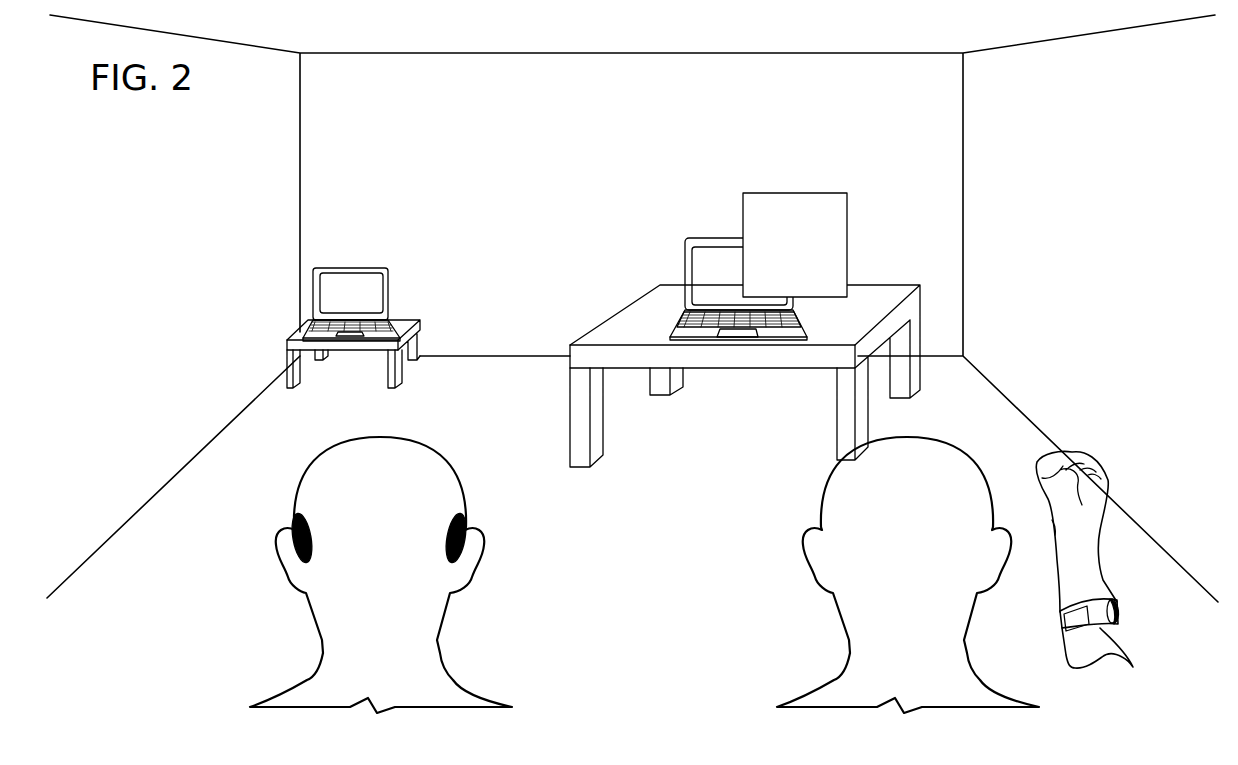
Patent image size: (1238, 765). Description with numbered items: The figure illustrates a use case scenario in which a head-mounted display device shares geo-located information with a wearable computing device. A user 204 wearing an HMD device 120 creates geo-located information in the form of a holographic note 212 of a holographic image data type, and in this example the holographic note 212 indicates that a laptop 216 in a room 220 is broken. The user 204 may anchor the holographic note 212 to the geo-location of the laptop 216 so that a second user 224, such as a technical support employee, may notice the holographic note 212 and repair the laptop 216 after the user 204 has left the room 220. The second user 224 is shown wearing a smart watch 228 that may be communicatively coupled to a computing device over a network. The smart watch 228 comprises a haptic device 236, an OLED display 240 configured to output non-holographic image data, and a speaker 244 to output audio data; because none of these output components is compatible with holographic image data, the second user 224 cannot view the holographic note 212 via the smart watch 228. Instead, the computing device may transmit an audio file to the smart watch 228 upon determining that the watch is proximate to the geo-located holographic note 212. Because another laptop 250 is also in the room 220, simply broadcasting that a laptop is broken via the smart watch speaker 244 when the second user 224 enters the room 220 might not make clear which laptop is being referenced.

The room 220 is at (919, 47).
The user 204 is at (386, 546).
The second user 224 is at (922, 546).
The HMD device 120 is at (307, 563).
The another laptop 250 is at (363, 267).
The laptop 216 is at (703, 238).
The holographic note 212 is at (847, 245).
The smart watch 228 is at (1112, 600).
The haptic device 236 is at (1063, 633).
The OLED display 240 is at (1123, 612).
The speaker 244 is at (1113, 653).